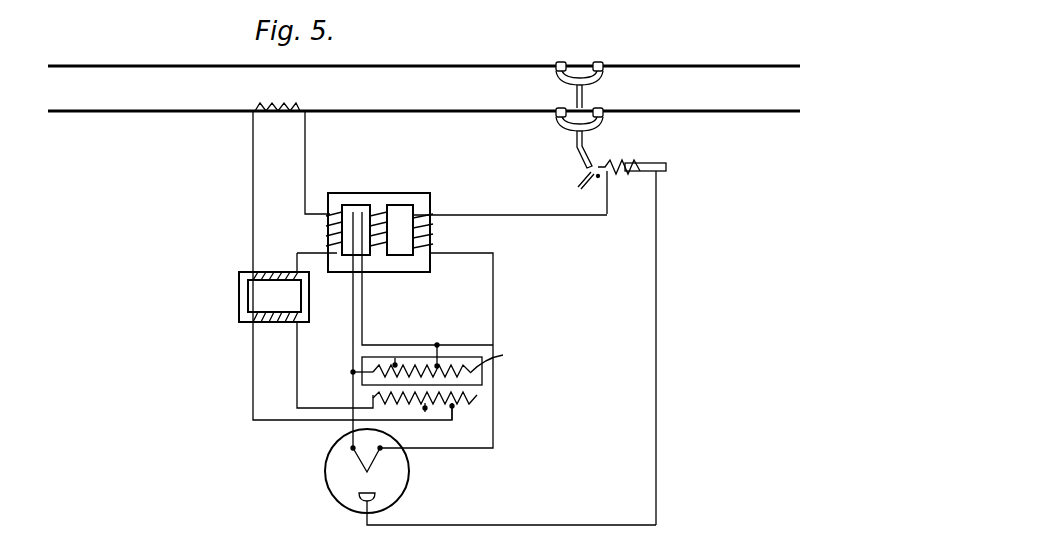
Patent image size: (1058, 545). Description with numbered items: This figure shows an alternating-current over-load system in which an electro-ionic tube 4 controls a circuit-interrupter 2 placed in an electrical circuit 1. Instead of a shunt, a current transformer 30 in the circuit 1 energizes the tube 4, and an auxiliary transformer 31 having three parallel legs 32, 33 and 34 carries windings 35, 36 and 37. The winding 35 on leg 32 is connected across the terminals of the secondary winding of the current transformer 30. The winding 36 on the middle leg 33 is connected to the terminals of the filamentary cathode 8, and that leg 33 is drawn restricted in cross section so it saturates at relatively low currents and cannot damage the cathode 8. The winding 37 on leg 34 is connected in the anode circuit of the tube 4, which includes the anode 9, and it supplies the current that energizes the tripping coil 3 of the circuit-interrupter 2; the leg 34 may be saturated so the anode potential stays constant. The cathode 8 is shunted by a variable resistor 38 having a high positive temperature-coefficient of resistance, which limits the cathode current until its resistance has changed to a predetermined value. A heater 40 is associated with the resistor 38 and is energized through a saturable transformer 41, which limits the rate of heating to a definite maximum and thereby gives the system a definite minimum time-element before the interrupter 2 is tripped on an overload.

The electrical circuit 1 is at (450, 97).
The circuit-interrupter 2 is at (597, 124).
The tripping coil 3 is at (647, 172).
The electro-ionic tube 4 is at (395, 482).
The filamentary cathode 8 is at (356, 462).
The anode 9 is at (360, 502).
The current transformer 30 is at (280, 114).
The auxiliary transformer 31 is at (382, 198).
The transformer leg 32 is at (338, 254).
The transformer leg 33 is at (380, 250).
The transformer leg 34 is at (430, 228).
The winding 35 is at (327, 234).
The winding 36 is at (395, 232).
The winding 37 is at (428, 243).
The variable resistor 38 is at (445, 368).
The heater 40 is at (462, 402).
The saturable transformer 41 is at (239, 297).